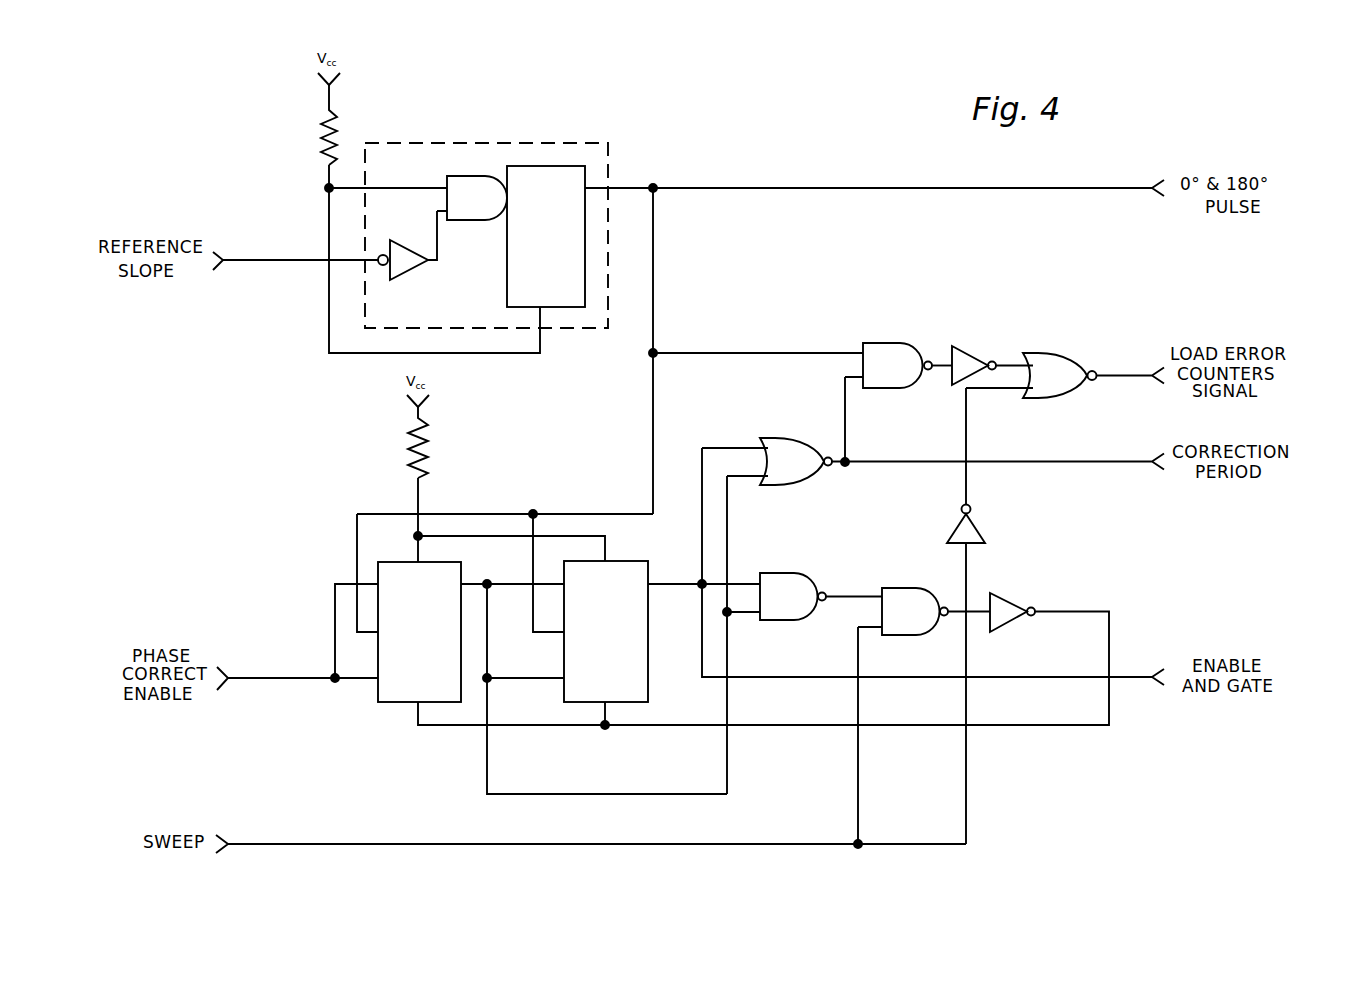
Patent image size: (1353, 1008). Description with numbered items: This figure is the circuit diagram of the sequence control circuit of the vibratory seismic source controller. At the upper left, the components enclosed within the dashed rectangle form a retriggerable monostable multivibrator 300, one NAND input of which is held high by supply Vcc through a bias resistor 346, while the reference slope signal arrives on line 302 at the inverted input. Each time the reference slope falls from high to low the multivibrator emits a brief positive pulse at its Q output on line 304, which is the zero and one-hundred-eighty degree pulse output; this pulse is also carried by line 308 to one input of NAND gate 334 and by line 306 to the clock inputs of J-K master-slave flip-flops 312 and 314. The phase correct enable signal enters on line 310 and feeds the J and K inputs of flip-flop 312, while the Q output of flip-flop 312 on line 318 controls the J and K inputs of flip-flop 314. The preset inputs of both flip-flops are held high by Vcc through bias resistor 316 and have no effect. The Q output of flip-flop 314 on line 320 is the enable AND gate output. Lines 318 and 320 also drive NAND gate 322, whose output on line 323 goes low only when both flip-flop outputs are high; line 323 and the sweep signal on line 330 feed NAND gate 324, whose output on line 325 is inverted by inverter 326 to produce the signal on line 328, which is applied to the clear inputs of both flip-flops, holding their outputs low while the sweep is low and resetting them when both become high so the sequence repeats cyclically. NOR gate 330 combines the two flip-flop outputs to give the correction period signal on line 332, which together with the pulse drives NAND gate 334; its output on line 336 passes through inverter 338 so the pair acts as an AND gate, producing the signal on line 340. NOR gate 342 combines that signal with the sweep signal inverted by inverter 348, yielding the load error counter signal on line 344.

The retriggerable monostable multivibrator 300 is at (493, 143).
The reference slope input line 302 is at (252, 262).
The Q output line 304 is at (623, 188).
The clock line 306 is at (653, 413).
The line to NAND gate 334 308 is at (818, 350).
The phase correct enable line 310 is at (285, 679).
The J-K master-slave flip-flop 312 is at (377, 692).
The J-K master-slave flip-flop 314 is at (648, 672).
The bias resistor 316 is at (423, 455).
The Q output line of flip-flop 312 318 is at (468, 584).
The Q output line of flip-flop 314 320 is at (665, 584).
The NAND gate 322 is at (793, 578).
The output line of NAND gate 322 323 is at (847, 596).
The NAND gate 324 is at (913, 593).
The output line of NAND gate 324 325 is at (955, 616).
The inverter 326 is at (1010, 600).
The clear input line 328 is at (1109, 647).
The NOR gate / sweep signal line 330 is at (797, 473).
The correction period output line 332 is at (897, 463).
The NAND gate 334 is at (893, 348).
The connecting line 336 is at (937, 370).
The inverter 338 is at (972, 350).
The output line of inverter 338 340 is at (1013, 362).
The NOR gate 342 is at (1057, 387).
The load error counter signal line 344 is at (1102, 373).
The bias resistor 346 is at (317, 145).
The inverter 348 is at (977, 523).